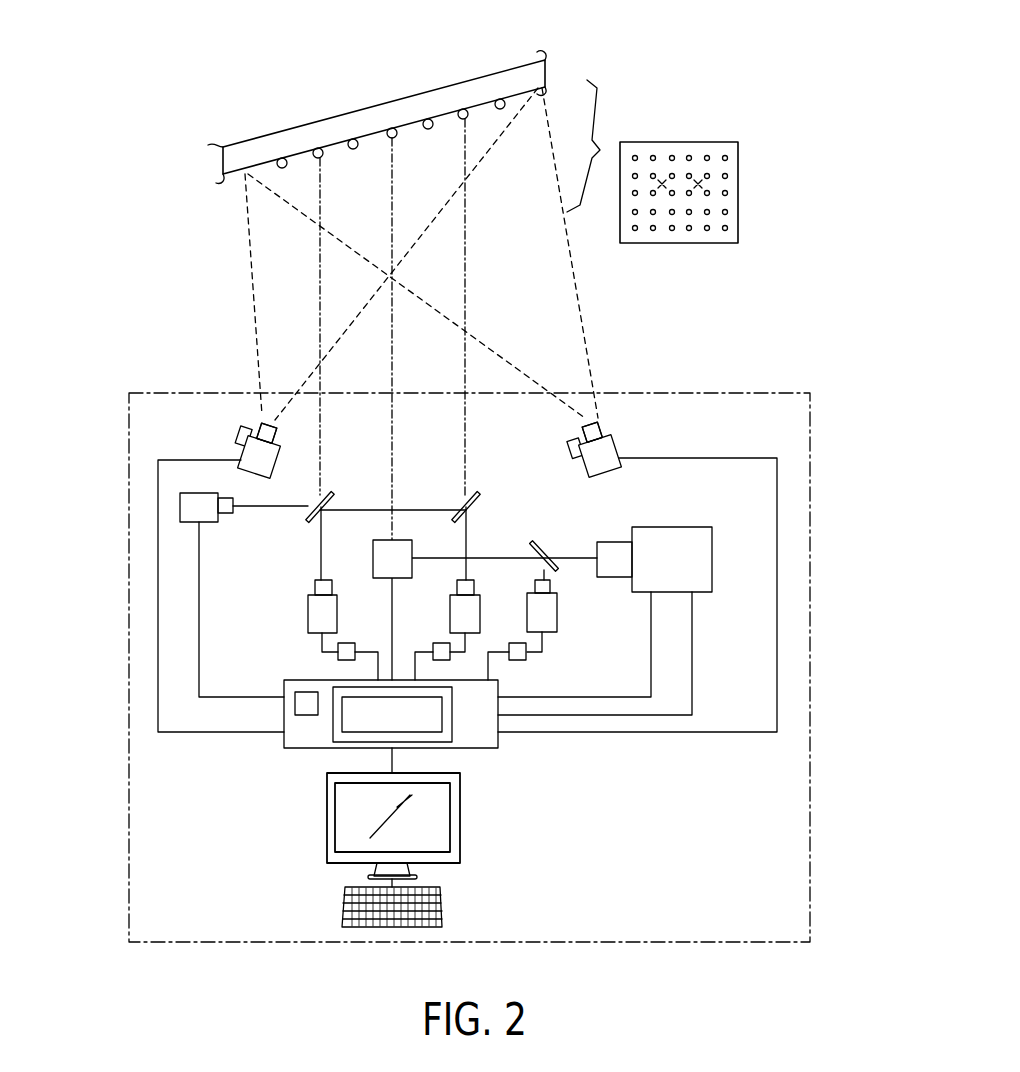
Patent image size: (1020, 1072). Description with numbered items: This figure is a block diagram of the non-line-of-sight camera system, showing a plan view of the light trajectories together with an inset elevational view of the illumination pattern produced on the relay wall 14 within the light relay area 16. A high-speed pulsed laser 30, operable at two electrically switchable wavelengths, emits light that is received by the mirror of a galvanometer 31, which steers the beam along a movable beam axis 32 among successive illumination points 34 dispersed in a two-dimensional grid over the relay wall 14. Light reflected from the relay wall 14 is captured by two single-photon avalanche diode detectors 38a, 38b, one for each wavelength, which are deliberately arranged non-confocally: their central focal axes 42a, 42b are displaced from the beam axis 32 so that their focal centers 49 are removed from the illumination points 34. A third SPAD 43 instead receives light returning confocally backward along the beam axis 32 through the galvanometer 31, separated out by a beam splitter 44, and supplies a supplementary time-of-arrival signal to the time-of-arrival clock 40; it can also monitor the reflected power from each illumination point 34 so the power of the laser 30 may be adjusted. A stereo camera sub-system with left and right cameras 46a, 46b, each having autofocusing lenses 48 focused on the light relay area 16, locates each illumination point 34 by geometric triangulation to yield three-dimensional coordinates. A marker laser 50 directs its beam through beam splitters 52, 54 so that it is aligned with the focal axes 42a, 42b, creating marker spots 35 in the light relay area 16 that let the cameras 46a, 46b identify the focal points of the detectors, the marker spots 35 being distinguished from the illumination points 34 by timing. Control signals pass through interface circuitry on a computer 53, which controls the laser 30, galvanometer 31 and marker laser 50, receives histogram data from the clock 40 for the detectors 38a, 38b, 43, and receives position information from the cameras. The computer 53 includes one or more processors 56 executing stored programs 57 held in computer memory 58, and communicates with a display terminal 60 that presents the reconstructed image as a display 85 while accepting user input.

The light relay area 16 is at (513, 131).
The relay wall 14 is at (562, 80).
The illumination points 34 is at (279, 168).
The marker spots 35 is at (662, 181).
The focal centers 49 is at (316, 155).
The beam axis 32 is at (394, 194).
The central focal axis 42a is at (318, 331).
The central focal axis 42b is at (464, 313).
The autofocusing lenses 48 is at (240, 420).
The left camera 46a is at (262, 478).
The right camera 46b is at (624, 446).
The marker laser 50 is at (208, 523).
The beam splitter 52 is at (335, 495).
The beam splitter 54 is at (481, 497).
The beam splitter 44 is at (540, 540).
The galvanometer 31 is at (372, 557).
The single-photon avalanche diode detector 38a is at (307, 605).
The single-photon avalanche diode detector 38b is at (481, 612).
The third SPAD 43 is at (557, 610).
The time-of-arrival clock 40 is at (352, 644).
The pulsed laser 30 is at (685, 569).
The computer 53 is at (426, 746).
The processors 56 is at (307, 711).
The computer memory 58 is at (411, 742).
The stored programs 57 is at (404, 727).
The display terminal 60 is at (377, 850).
The display 85 is at (437, 826).